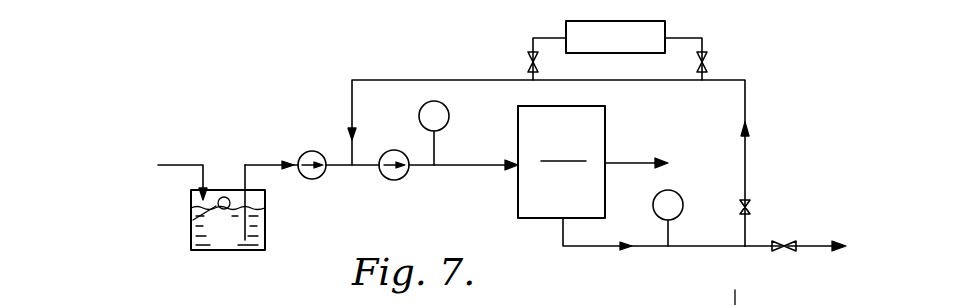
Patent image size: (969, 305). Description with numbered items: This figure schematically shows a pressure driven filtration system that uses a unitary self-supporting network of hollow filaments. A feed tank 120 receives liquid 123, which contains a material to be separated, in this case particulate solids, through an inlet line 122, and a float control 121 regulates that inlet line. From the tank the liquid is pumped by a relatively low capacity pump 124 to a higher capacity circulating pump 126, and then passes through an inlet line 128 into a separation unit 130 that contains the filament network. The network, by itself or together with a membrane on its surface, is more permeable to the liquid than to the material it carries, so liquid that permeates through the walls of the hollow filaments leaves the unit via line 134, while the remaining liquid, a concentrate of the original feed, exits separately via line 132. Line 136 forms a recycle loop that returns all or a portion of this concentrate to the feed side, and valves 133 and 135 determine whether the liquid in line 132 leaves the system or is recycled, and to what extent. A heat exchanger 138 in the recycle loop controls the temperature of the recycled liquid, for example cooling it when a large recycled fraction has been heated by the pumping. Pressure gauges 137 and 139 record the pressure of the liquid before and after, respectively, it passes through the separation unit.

The feed tank 120 is at (265, 232).
The float control 121 is at (227, 197).
The inlet line 122 is at (206, 185).
The liquid 123 is at (228, 225).
The low capacity pump 124 is at (330, 143).
The circulating pump 126 is at (403, 179).
The inlet line 128 is at (452, 163).
The separation unit 130 is at (561, 162).
The line 132 is at (563, 233).
The valve 133 is at (787, 249).
The line 134 is at (618, 161).
The valve 135 is at (750, 206).
The line 136 is at (747, 103).
The pressure gauge 137 is at (439, 116).
The heat exchanger 138 is at (577, 33).
The pressure gauge 139 is at (673, 208).